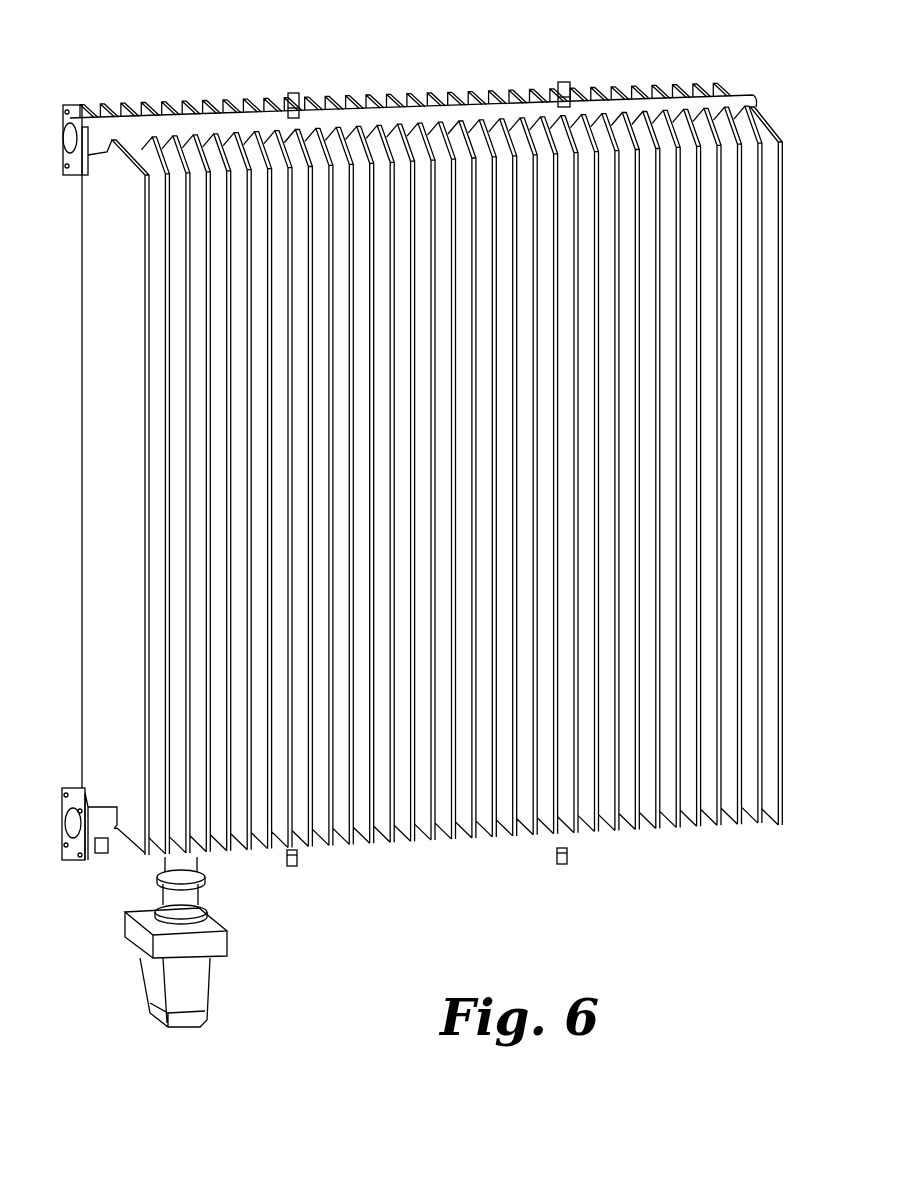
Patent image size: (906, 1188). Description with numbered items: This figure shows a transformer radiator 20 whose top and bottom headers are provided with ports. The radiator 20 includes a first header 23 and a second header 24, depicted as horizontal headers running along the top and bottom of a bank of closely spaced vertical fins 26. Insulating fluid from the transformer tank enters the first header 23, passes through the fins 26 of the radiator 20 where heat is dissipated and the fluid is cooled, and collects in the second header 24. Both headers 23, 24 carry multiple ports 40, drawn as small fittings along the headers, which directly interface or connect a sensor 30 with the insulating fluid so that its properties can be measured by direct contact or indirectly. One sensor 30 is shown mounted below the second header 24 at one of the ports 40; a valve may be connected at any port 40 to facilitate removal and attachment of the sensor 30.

The radiator 20 is at (409, 444).
The first header 23 is at (655, 103).
The second header 24 is at (97, 803).
The fins 26 is at (412, 203).
The sensor 30 is at (200, 992).
The port 40 is at (288, 95).